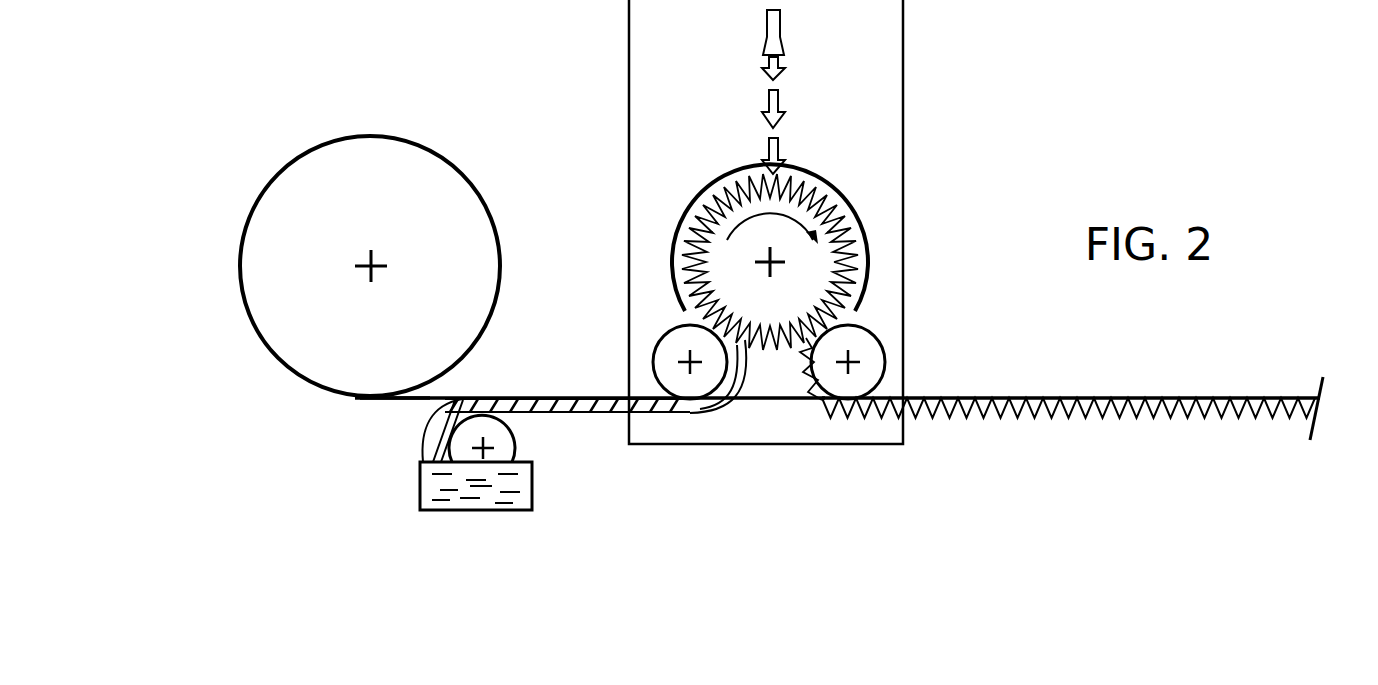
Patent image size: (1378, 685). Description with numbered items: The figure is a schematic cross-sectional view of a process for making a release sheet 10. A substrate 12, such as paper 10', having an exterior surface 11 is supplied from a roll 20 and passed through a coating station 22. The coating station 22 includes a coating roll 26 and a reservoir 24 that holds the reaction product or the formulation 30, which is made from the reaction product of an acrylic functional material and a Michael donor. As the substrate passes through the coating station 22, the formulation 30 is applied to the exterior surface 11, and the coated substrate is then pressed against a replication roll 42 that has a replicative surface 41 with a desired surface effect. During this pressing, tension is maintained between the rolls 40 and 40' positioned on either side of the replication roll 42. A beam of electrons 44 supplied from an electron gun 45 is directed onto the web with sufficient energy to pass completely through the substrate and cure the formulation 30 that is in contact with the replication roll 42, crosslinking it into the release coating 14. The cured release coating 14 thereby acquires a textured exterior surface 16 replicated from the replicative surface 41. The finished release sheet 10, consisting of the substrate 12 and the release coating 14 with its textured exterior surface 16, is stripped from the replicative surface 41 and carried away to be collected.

The release sheet 10 is at (1090, 398).
The paper 10' is at (590, 369).
The exterior surface 11 is at (425, 399).
The substrate 12 is at (1225, 397).
The release coating 14 is at (1320, 408).
The textured exterior surface 16 is at (1250, 418).
The roll 20 is at (370, 266).
The coating station 22 is at (513, 484).
The reservoir 24 is at (497, 500).
The coating roll 26 is at (518, 439).
The formulation 30 is at (575, 408).
The roll 40 is at (701, 414).
The roll 40' is at (859, 414).
The replicative surface 41 is at (850, 272).
The replication roll 42 is at (828, 278).
The beam of electrons 44 is at (768, 105).
The electron gun 45 is at (765, 35).